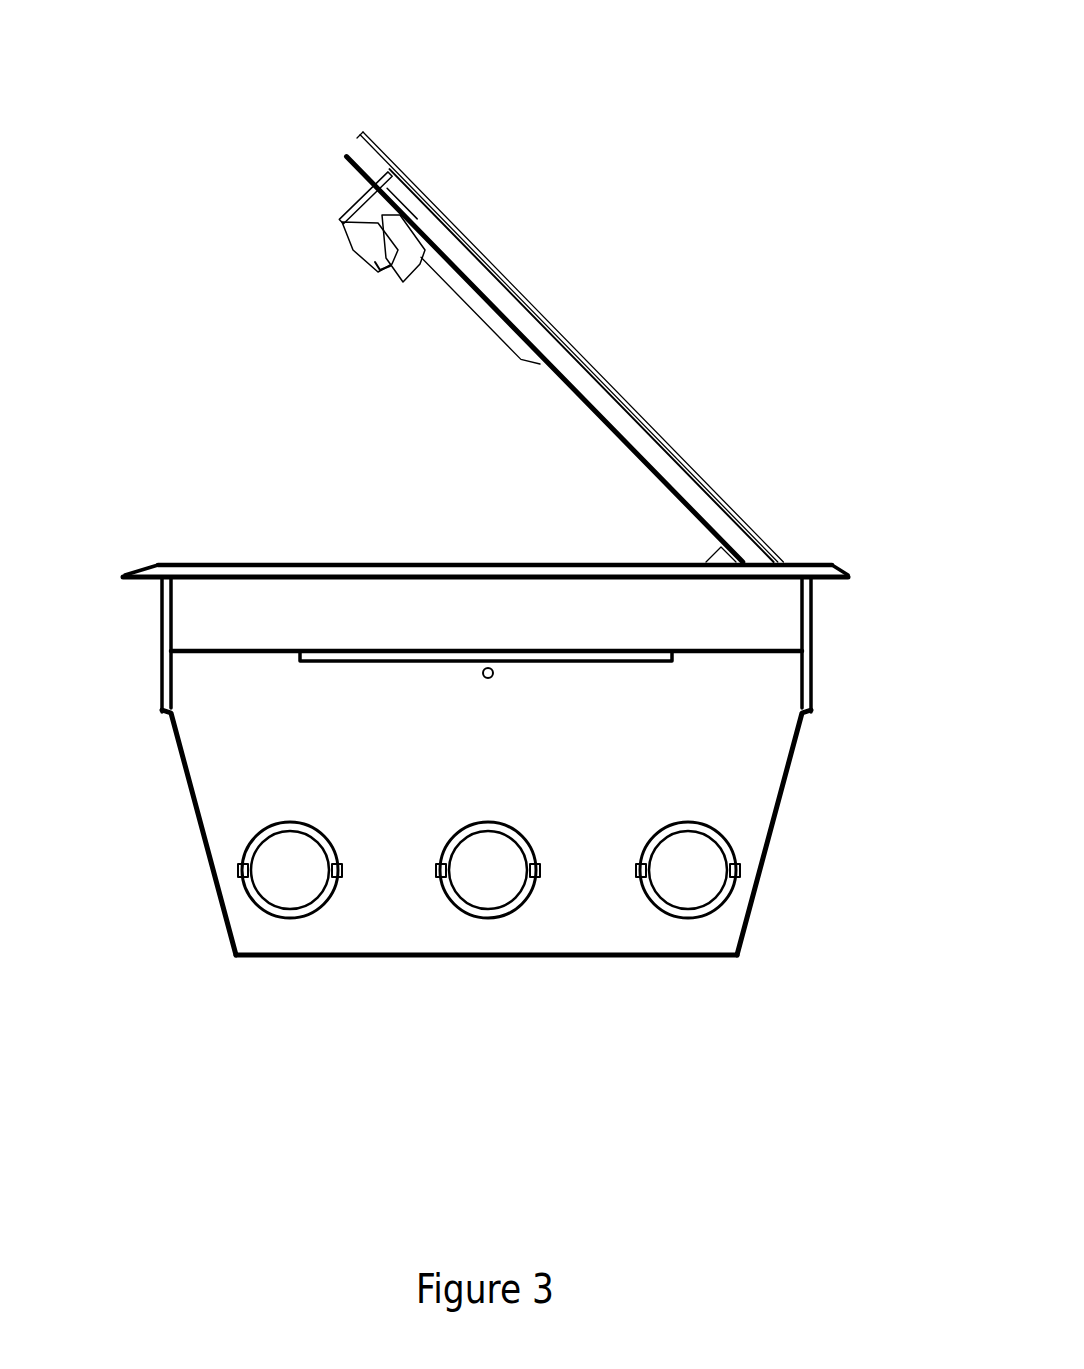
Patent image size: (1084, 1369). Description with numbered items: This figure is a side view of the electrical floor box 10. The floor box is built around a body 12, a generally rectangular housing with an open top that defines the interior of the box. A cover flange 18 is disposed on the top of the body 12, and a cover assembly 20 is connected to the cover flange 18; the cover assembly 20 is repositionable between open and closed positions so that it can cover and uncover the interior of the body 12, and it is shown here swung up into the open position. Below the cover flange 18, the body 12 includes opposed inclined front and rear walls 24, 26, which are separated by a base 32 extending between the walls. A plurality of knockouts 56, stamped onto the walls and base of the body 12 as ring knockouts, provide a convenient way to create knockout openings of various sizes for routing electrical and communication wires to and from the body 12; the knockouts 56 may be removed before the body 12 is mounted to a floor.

The electrical floor box 10 is at (660, 166).
The body 12 is at (578, 890).
The cover flange 18 is at (757, 619).
The cover assembly 20 is at (684, 390).
The front wall 24 is at (197, 830).
The rear wall 26 is at (772, 816).
The base 32 is at (400, 958).
The knockouts 56 is at (292, 884).